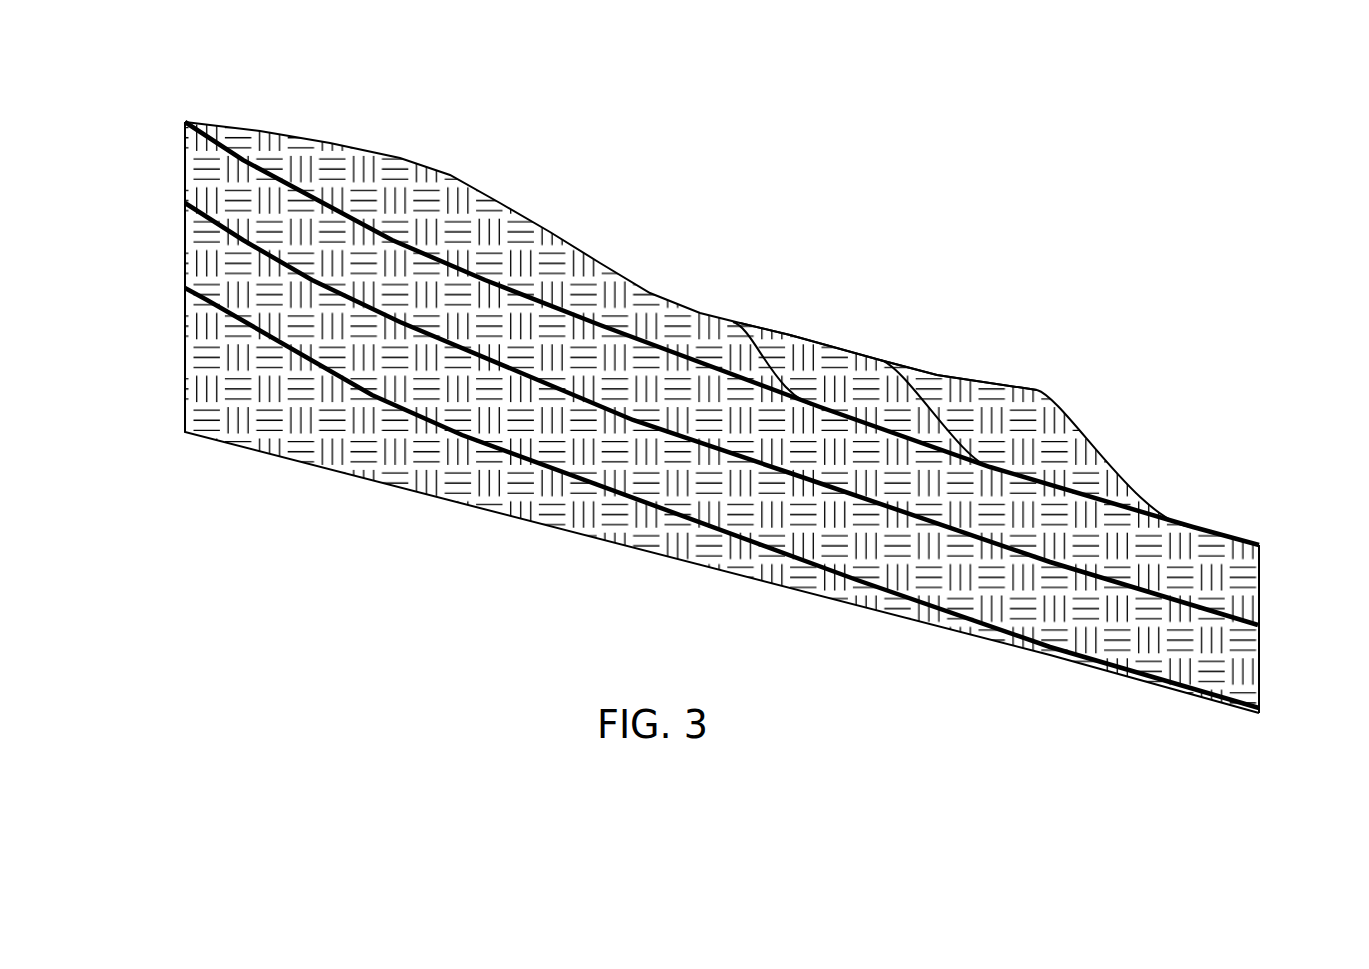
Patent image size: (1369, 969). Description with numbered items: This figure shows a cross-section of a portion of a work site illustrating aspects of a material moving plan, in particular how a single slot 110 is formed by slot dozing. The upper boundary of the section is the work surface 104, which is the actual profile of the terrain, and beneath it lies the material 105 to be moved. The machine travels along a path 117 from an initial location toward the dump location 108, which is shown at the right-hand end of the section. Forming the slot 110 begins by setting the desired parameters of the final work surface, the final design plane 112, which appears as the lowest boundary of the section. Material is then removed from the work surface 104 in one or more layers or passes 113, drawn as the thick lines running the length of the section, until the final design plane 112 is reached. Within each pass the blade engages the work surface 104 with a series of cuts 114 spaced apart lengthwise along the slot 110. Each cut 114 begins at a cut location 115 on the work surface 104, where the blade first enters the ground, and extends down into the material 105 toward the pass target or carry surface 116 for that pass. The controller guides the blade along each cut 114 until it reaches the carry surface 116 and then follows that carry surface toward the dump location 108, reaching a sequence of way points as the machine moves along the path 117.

The work surface 104 is at (450, 173).
The material 105 is at (322, 178).
The dump location 108 is at (1300, 545).
The slot 110 is at (1162, 405).
The final design plane 112 is at (293, 457).
The passes 113 is at (190, 298).
The cuts 114 is at (975, 450).
The cut location 115 is at (733, 322).
The carry surface 116 is at (1230, 700).
The path 117 is at (660, 162).